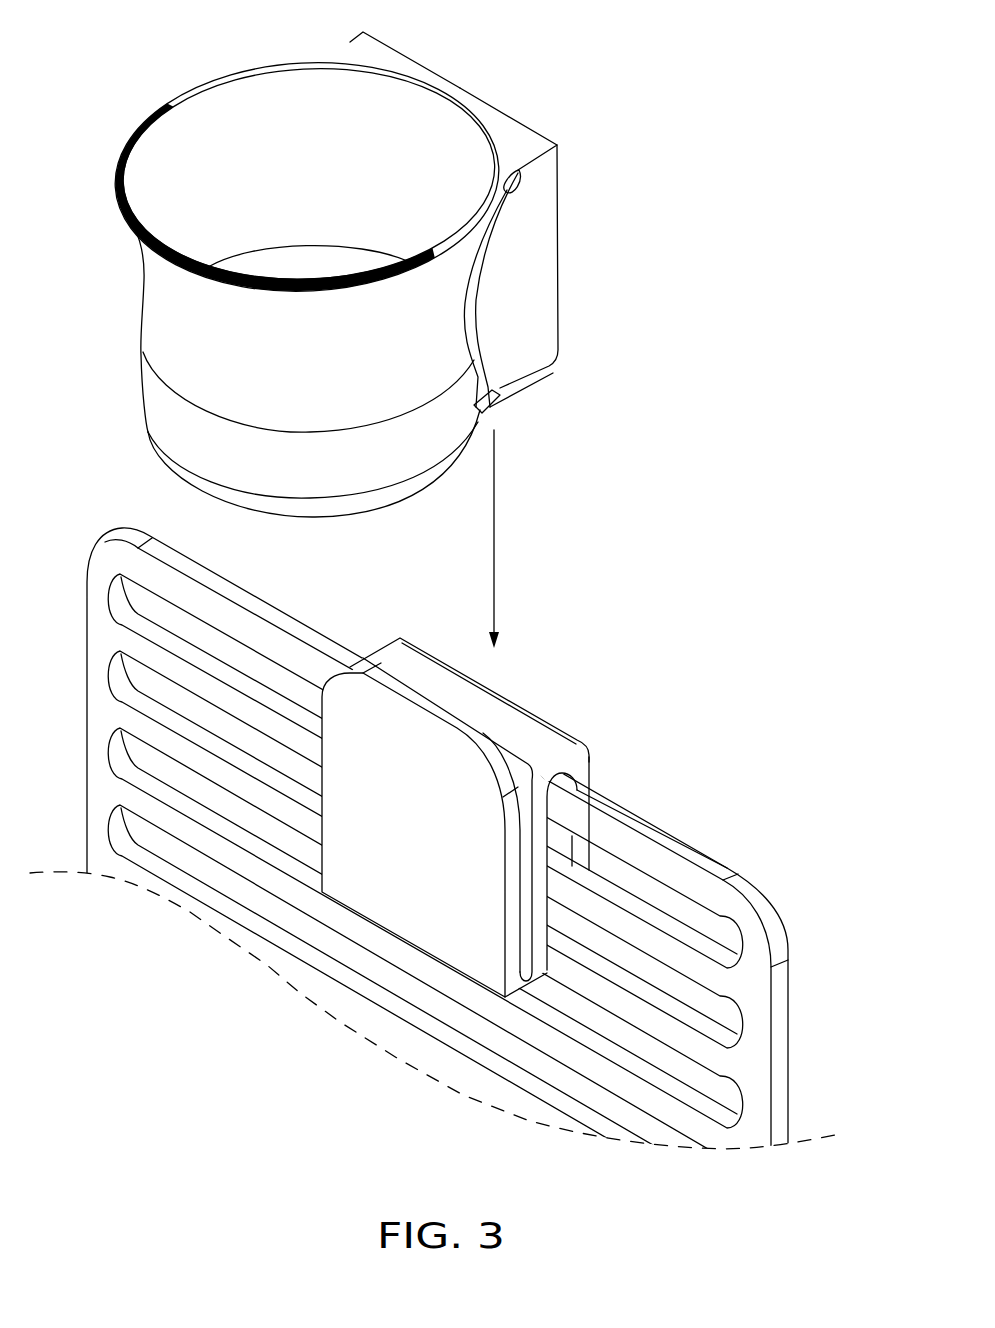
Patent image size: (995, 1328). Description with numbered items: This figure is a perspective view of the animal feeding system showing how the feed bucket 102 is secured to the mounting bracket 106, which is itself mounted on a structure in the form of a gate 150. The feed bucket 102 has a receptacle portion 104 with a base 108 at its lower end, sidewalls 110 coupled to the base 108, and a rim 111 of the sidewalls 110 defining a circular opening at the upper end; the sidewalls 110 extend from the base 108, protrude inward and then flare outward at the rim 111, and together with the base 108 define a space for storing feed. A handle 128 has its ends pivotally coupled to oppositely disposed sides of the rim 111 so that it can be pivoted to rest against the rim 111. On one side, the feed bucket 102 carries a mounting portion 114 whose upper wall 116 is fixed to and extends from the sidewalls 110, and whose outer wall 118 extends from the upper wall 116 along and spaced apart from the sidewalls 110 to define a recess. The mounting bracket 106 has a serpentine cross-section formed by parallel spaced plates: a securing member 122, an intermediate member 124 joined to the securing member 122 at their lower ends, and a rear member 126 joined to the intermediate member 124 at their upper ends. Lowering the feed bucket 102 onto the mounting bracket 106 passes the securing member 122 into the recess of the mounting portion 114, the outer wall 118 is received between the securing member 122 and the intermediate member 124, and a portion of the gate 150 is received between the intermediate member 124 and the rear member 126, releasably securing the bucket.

The feed bucket 102 is at (138, 273).
The receptacle portion 104 is at (177, 93).
The mounting bracket 106 is at (527, 696).
The base 108 is at (356, 515).
The sidewalls 110 is at (205, 331).
The rim 111 is at (284, 58).
The mounting portion 114 is at (518, 121).
The upper wall 116 is at (372, 46).
The outer wall 118 is at (562, 262).
The securing member 122 is at (380, 872).
The intermediate member 124 is at (548, 810).
The rear member 126 is at (586, 851).
The handle 128 is at (128, 133).
The gate 150 is at (775, 894).